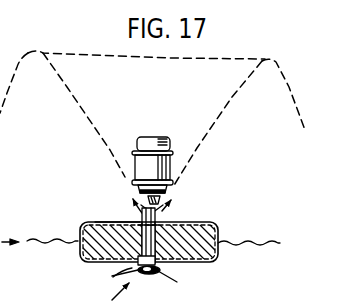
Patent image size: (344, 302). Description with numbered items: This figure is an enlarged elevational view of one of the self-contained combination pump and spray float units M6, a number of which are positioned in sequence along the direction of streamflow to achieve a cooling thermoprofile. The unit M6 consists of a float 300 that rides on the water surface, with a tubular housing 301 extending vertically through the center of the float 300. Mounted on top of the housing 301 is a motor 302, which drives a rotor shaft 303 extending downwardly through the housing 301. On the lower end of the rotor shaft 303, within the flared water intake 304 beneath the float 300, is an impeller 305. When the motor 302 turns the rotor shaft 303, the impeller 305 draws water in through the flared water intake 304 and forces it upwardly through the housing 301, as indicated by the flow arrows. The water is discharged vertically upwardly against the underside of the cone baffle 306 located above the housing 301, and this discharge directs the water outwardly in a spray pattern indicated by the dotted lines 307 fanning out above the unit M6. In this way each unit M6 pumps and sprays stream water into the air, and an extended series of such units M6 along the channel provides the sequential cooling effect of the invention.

The float 300 is at (92, 248).
The tubular housing 301 is at (170, 223).
The motor 302 is at (150, 139).
The rotor shaft 303 is at (123, 220).
The flared water intake 304 is at (137, 271).
The impeller 305 is at (143, 277).
The cone baffle 306 is at (172, 199).
The spray pattern 307 is at (286, 70).
The combination pump and spray float unit M6 is at (221, 220).